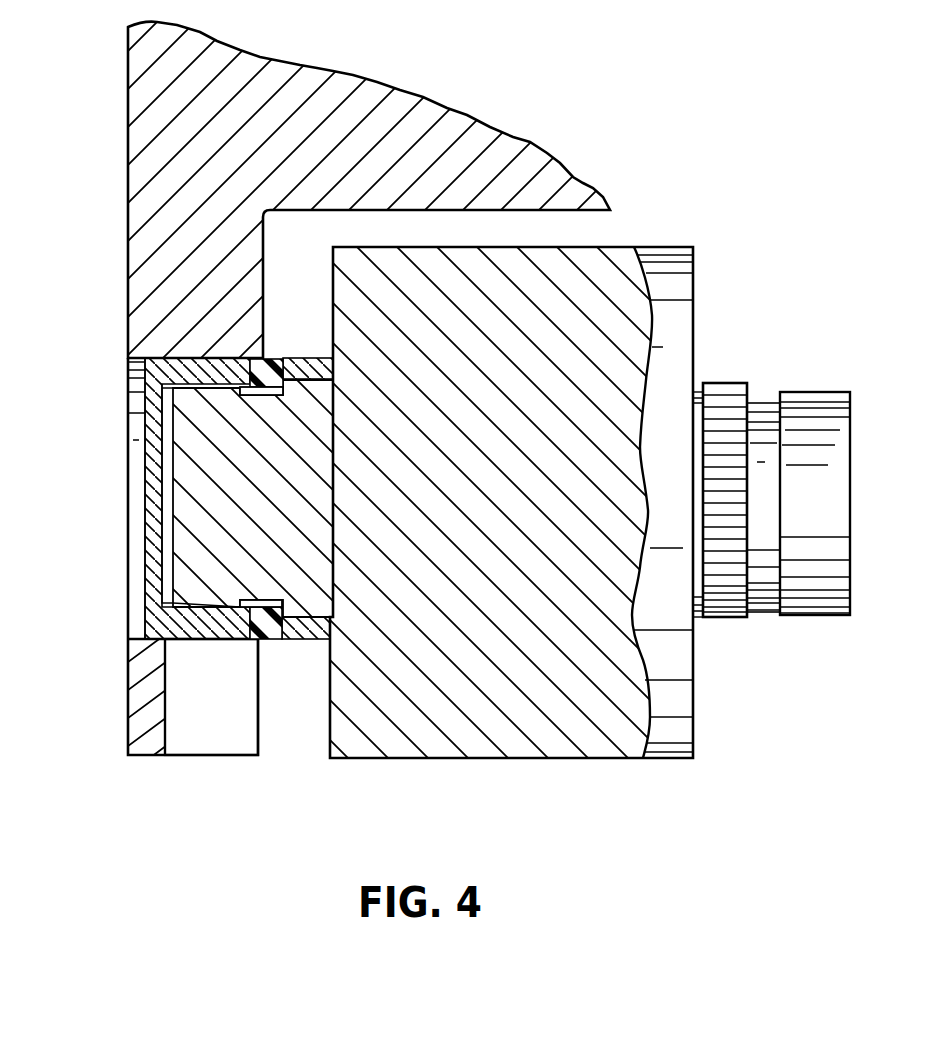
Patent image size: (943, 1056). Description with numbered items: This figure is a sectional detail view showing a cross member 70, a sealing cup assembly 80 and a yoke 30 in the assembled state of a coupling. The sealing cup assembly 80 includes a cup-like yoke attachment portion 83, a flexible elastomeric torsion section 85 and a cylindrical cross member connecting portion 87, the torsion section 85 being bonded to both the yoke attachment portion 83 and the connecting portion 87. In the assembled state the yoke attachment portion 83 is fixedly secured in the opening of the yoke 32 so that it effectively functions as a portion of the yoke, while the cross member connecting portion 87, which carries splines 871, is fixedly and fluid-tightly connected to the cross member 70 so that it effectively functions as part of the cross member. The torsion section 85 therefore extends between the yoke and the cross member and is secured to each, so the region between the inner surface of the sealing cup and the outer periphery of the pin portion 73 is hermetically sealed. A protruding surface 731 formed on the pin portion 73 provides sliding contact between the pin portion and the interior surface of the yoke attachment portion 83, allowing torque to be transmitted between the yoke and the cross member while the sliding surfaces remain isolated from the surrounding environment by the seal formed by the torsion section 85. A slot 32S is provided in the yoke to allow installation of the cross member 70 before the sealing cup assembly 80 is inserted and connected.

The shaft 30 is at (128, 142).
The yoke 32 is at (162, 292).
The slot 32S is at (237, 717).
The cross member 70 is at (510, 405).
The pin portion 73 is at (780, 616).
The protruding surface 731 is at (221, 396).
The sealing cup assembly 80 is at (128, 437).
The yoke attachment portion 83 is at (183, 372).
The elastomeric torsion section 85 is at (266, 364).
The cross member connecting portion 87 is at (309, 640).
The splines 871 is at (305, 372).